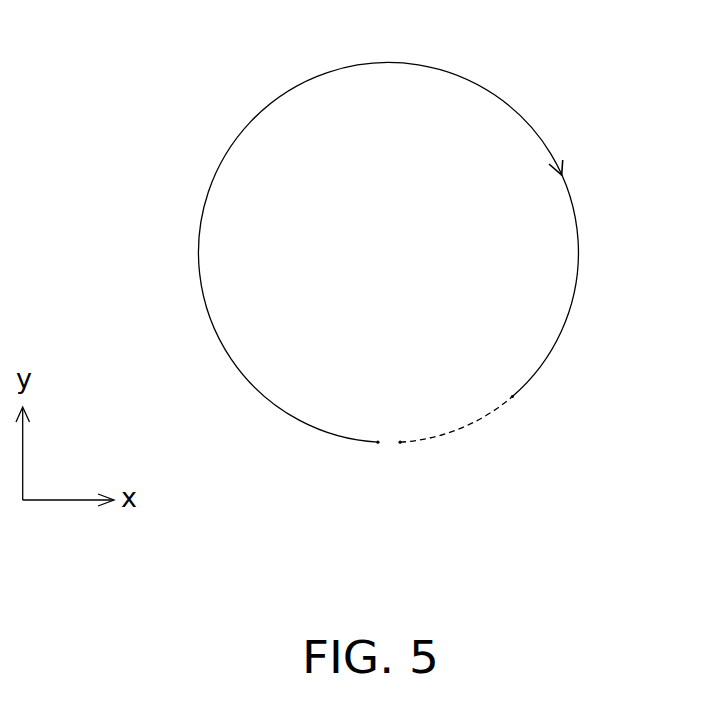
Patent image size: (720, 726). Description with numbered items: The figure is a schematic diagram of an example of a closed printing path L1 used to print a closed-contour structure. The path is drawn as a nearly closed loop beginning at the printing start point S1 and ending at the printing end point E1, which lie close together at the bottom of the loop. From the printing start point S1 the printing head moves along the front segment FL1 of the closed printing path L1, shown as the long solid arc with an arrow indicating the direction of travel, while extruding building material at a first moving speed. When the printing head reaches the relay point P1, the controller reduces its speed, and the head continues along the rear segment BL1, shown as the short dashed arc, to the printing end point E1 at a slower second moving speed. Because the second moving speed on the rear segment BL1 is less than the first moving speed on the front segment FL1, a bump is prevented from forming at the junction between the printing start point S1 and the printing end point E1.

The closed printing path L1 is at (444, 265).
The front segment FL1 is at (576, 217).
The rear segment BL1 is at (458, 429).
The printing start point S1 is at (378, 442).
The printing end point E1 is at (400, 442).
The relay point P1 is at (512, 396).